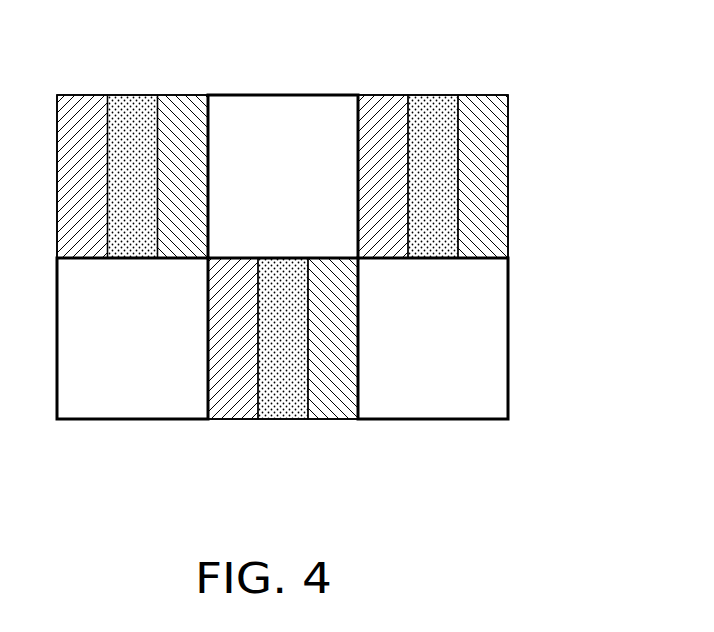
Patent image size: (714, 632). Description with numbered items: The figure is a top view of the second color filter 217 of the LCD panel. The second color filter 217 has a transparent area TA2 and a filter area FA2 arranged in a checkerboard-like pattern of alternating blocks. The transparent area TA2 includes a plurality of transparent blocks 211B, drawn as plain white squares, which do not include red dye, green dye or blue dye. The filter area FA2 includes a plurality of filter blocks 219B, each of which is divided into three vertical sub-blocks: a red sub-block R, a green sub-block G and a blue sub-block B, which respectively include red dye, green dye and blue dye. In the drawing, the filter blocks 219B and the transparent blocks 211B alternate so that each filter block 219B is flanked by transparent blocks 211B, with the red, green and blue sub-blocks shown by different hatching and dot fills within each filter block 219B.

The second color filter 217 is at (640, 475).
The filter blocks 219B is at (130, 95).
The transparent blocks 211B is at (278, 94).
The filter area FA2 is at (287, 261).
The transparent area TA2 is at (287, 262).